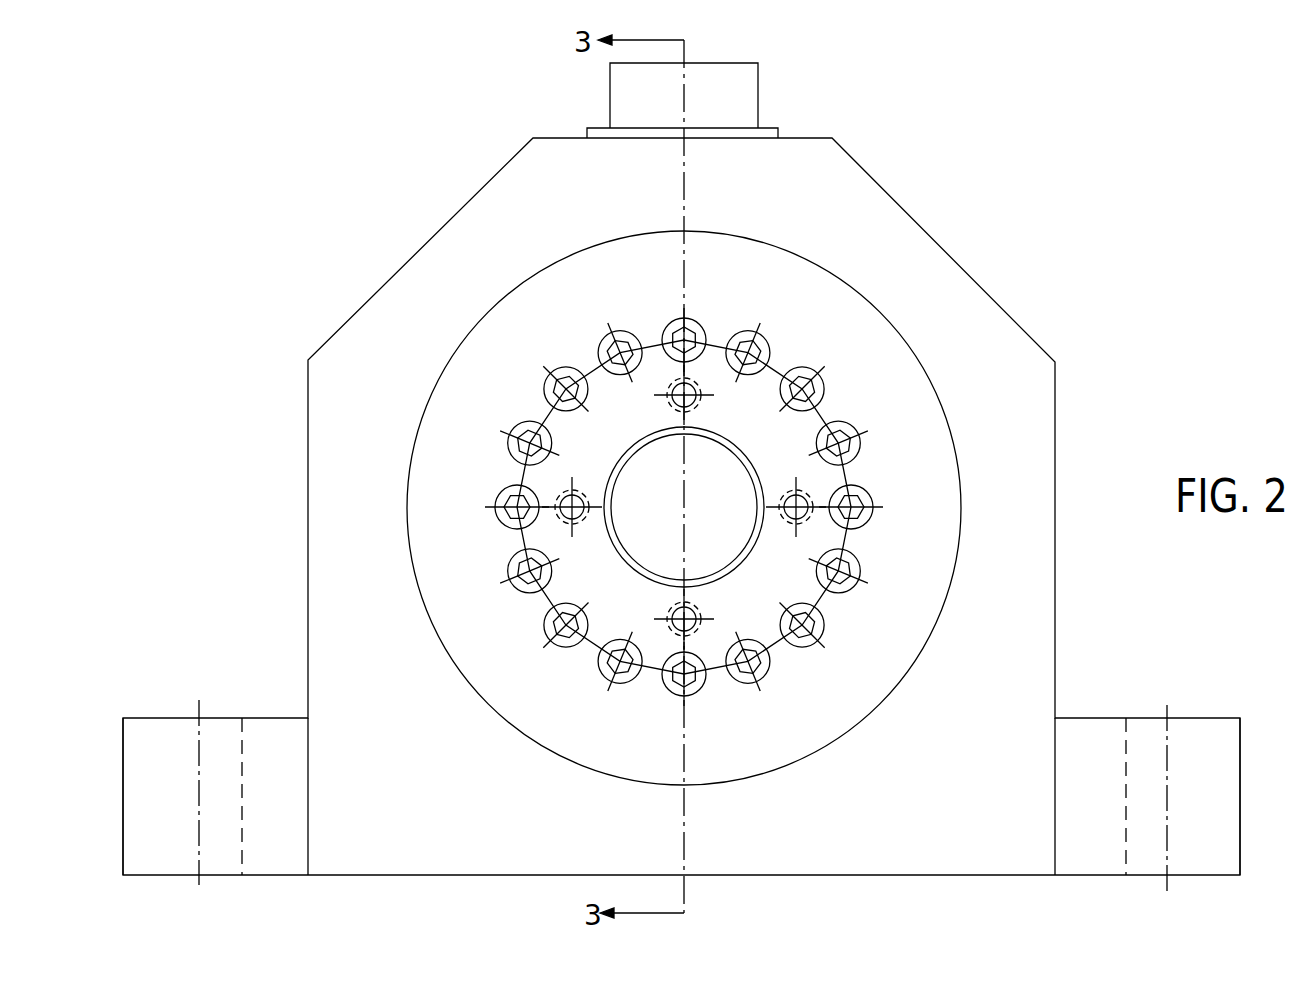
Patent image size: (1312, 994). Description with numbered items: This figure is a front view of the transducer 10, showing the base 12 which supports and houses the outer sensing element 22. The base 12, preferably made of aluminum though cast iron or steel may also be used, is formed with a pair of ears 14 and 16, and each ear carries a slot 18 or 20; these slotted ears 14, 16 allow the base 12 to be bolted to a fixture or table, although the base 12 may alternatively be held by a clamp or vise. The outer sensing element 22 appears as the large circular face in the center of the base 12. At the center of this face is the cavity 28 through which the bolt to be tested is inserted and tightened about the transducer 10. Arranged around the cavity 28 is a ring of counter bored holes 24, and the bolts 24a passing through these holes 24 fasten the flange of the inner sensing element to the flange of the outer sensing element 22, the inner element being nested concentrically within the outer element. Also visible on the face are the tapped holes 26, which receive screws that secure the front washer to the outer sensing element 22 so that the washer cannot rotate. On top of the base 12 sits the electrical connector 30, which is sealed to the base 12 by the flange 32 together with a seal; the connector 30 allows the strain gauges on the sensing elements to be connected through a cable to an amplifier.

The transducer 10 is at (390, 148).
The base 12 is at (1036, 332).
The ear 14 is at (1210, 718).
The ear 16 is at (160, 718).
The slot 18 is at (1128, 848).
The slot 20 is at (242, 832).
The outer sensing element 22 is at (920, 628).
The counter bored holes 24 is at (860, 494).
The bolts 24a is at (862, 515).
The tapped holes 26 is at (700, 376).
The cavity 28 is at (742, 548).
The electrical connector 30 is at (758, 88).
The flange 32 is at (778, 130).